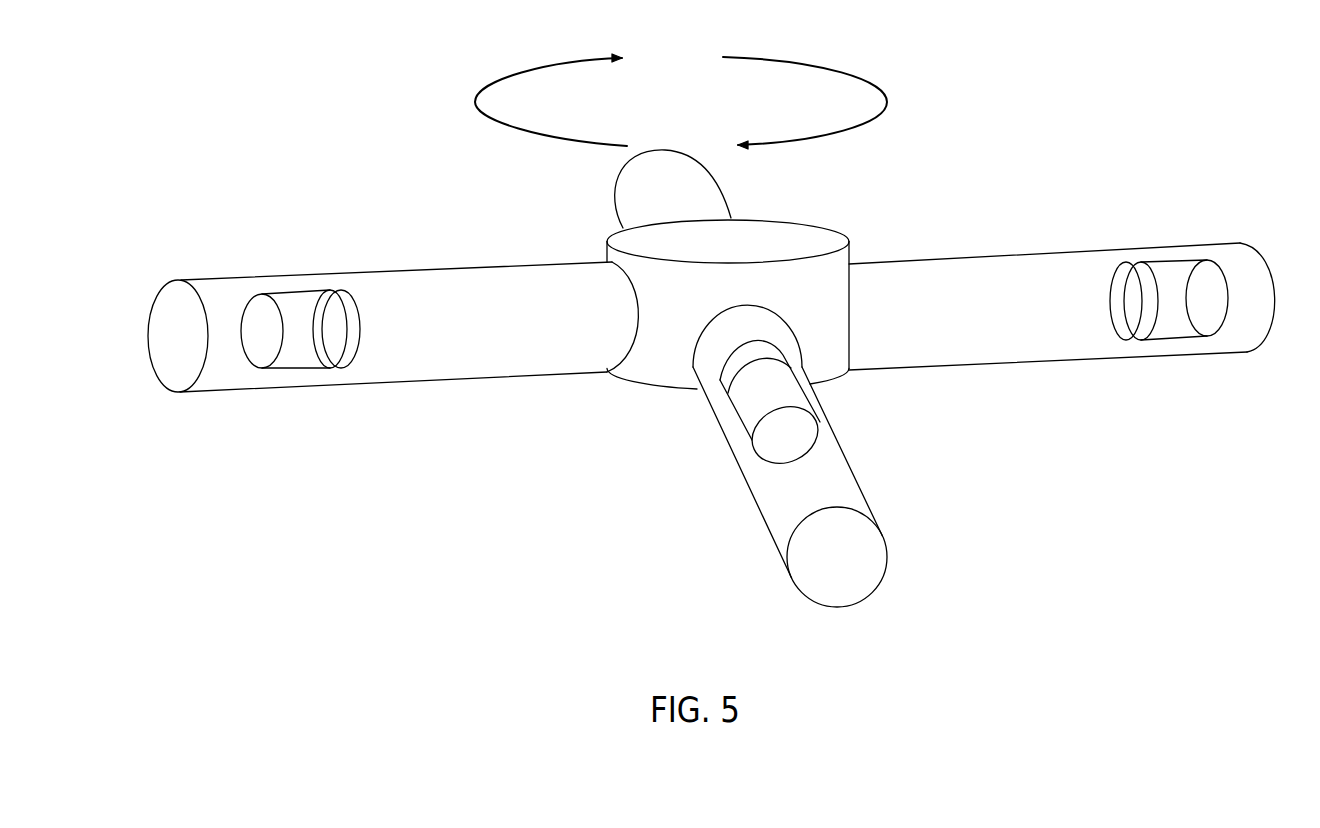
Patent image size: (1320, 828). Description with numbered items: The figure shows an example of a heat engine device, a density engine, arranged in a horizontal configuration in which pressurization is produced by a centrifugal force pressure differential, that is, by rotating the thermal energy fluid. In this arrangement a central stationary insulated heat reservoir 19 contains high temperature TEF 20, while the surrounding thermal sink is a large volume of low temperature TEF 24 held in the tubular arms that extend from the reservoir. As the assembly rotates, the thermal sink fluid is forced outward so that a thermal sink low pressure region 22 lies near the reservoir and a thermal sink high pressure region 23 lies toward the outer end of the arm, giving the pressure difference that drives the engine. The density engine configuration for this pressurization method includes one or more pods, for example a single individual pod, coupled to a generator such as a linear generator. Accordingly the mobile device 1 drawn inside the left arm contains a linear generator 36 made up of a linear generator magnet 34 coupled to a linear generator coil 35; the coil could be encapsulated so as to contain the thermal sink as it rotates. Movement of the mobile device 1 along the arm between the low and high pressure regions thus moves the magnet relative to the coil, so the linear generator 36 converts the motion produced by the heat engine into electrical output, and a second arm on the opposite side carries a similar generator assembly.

The mobile device 1 is at (292, 353).
The stationary insulated heat reservoir 19 is at (660, 348).
The high temperature TEF 20 is at (578, 337).
The thermal sink low pressure region 22 is at (568, 306).
The thermal sink high pressure region 23 is at (393, 326).
The low temperature TEF 24 is at (222, 348).
The linear generator magnet 34 is at (343, 348).
The linear generator coil 35 is at (454, 262).
The linear generator 36 is at (1050, 320).